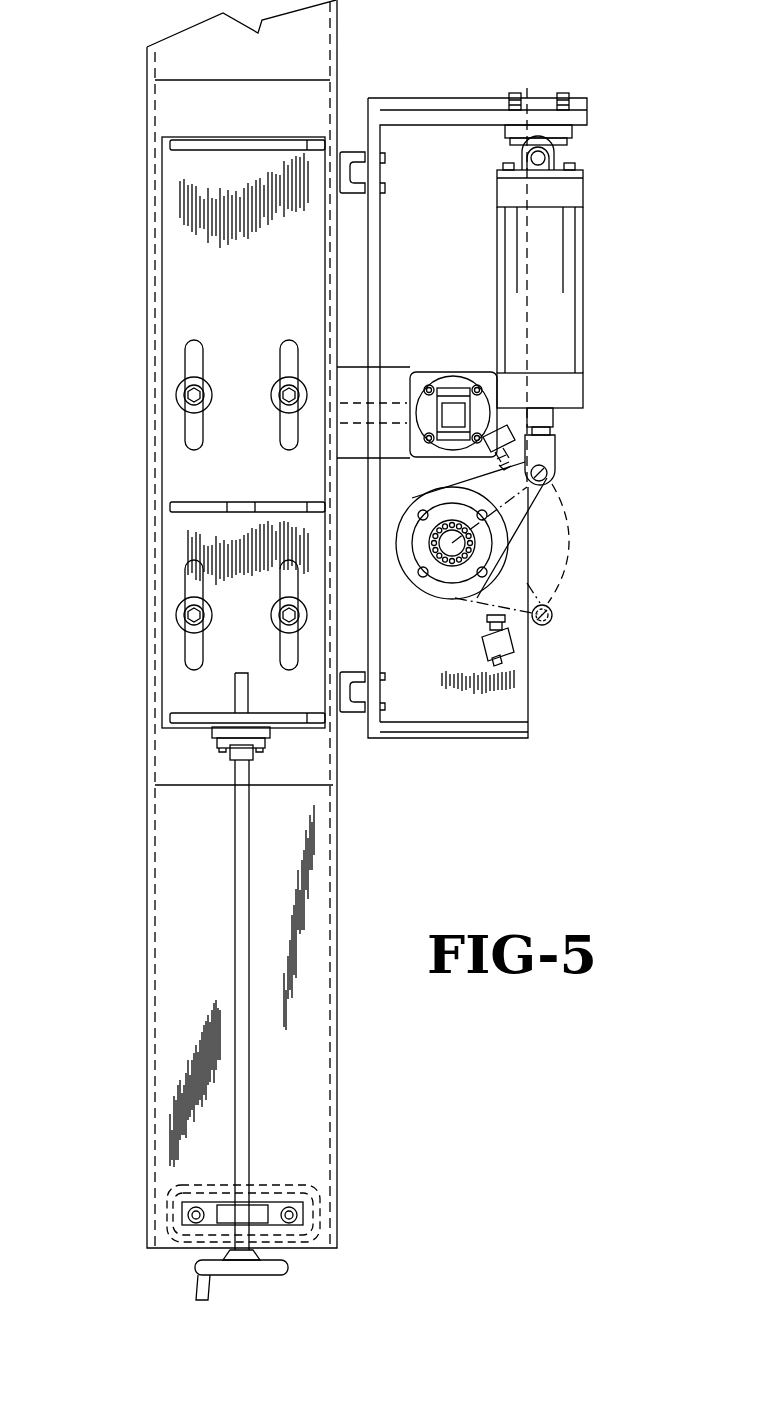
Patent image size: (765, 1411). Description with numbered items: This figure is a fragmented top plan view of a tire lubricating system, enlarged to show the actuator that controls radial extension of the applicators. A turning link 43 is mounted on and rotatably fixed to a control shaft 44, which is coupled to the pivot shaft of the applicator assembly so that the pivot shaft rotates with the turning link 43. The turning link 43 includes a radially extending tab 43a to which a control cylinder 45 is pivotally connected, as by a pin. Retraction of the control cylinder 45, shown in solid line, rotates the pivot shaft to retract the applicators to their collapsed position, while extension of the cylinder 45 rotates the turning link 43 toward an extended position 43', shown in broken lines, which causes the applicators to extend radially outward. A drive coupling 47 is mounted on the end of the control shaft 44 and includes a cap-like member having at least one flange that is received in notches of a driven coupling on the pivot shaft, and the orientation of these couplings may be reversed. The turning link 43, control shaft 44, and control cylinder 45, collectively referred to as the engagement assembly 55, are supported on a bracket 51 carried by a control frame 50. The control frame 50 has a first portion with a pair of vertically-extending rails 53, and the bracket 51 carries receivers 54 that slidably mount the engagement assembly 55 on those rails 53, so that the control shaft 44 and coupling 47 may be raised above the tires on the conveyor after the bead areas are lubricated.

The turning link 43 is at (536, 545).
The radially extending tab 43a is at (550, 472).
The extended position 43' is at (599, 635).
The control shaft 44 is at (452, 547).
The control cylinder 45 is at (545, 322).
The drive coupling 47 is at (148, 967).
The control frame 50 is at (204, 291).
The bracket 51 is at (375, 592).
The vertically-extending rails 53 is at (325, 270).
The receivers 54 is at (360, 192).
The engagement assembly 55 is at (600, 186).